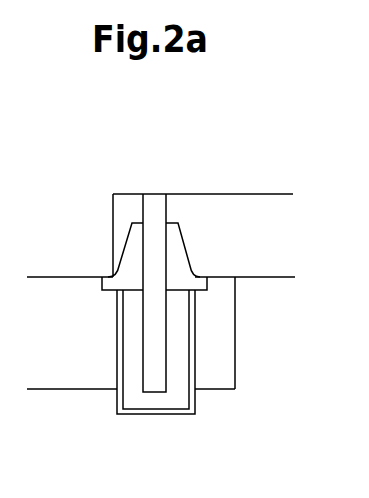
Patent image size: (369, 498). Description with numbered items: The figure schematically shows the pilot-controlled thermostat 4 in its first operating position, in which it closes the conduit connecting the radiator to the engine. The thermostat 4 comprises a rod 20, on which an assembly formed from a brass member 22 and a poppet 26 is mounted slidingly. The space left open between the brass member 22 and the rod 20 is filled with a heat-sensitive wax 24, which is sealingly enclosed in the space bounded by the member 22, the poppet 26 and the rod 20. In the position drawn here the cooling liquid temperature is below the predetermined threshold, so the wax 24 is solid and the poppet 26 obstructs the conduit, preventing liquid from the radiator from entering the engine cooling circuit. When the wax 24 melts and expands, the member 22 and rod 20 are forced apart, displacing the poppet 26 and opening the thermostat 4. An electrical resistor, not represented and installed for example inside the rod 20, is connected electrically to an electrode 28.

The thermostat 4 is at (253, 345).
The rod 20 is at (161, 195).
The brass member 22 is at (118, 415).
The wax 24 is at (177, 400).
The poppet 26 is at (130, 267).
The electrode 28 is at (157, 195).